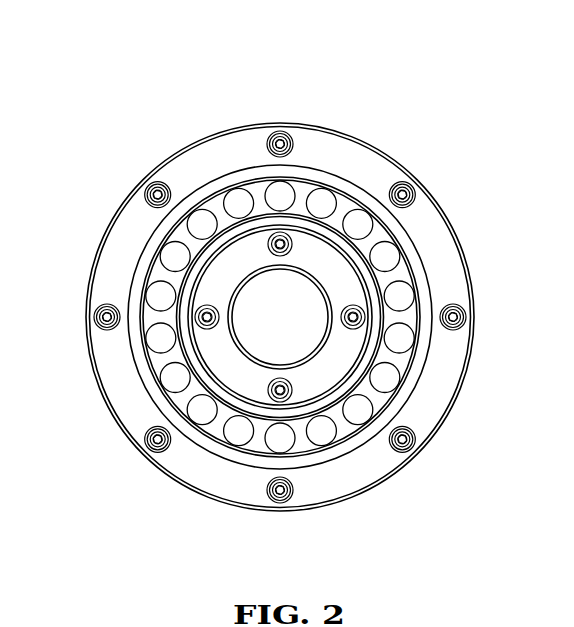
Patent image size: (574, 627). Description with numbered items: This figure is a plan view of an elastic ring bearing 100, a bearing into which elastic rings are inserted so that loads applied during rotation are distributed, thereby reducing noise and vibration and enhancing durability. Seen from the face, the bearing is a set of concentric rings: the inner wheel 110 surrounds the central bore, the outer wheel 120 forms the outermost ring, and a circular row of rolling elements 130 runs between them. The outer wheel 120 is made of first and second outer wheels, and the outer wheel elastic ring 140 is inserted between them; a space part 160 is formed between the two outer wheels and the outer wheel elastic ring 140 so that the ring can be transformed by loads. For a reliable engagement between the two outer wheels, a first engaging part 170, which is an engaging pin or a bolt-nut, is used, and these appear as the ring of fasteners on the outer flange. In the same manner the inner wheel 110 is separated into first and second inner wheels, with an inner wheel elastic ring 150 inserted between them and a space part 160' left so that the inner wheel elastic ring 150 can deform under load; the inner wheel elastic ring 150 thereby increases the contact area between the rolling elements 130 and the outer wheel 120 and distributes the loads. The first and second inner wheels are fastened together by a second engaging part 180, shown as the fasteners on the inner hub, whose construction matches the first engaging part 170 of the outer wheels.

The elastic ring bearing 100 is at (462, 61).
The inner wheel 110 is at (213, 367).
The outer wheel 120 is at (352, 134).
The rolling element 130 is at (420, 346).
The outer wheel elastic ring 140 is at (407, 233).
The inner wheel elastic ring 150 is at (398, 404).
The space part 160 is at (345, 317).
The space part 160' is at (256, 360).
The first engaging part 170 is at (414, 180).
The second engaging part 180 is at (188, 324).